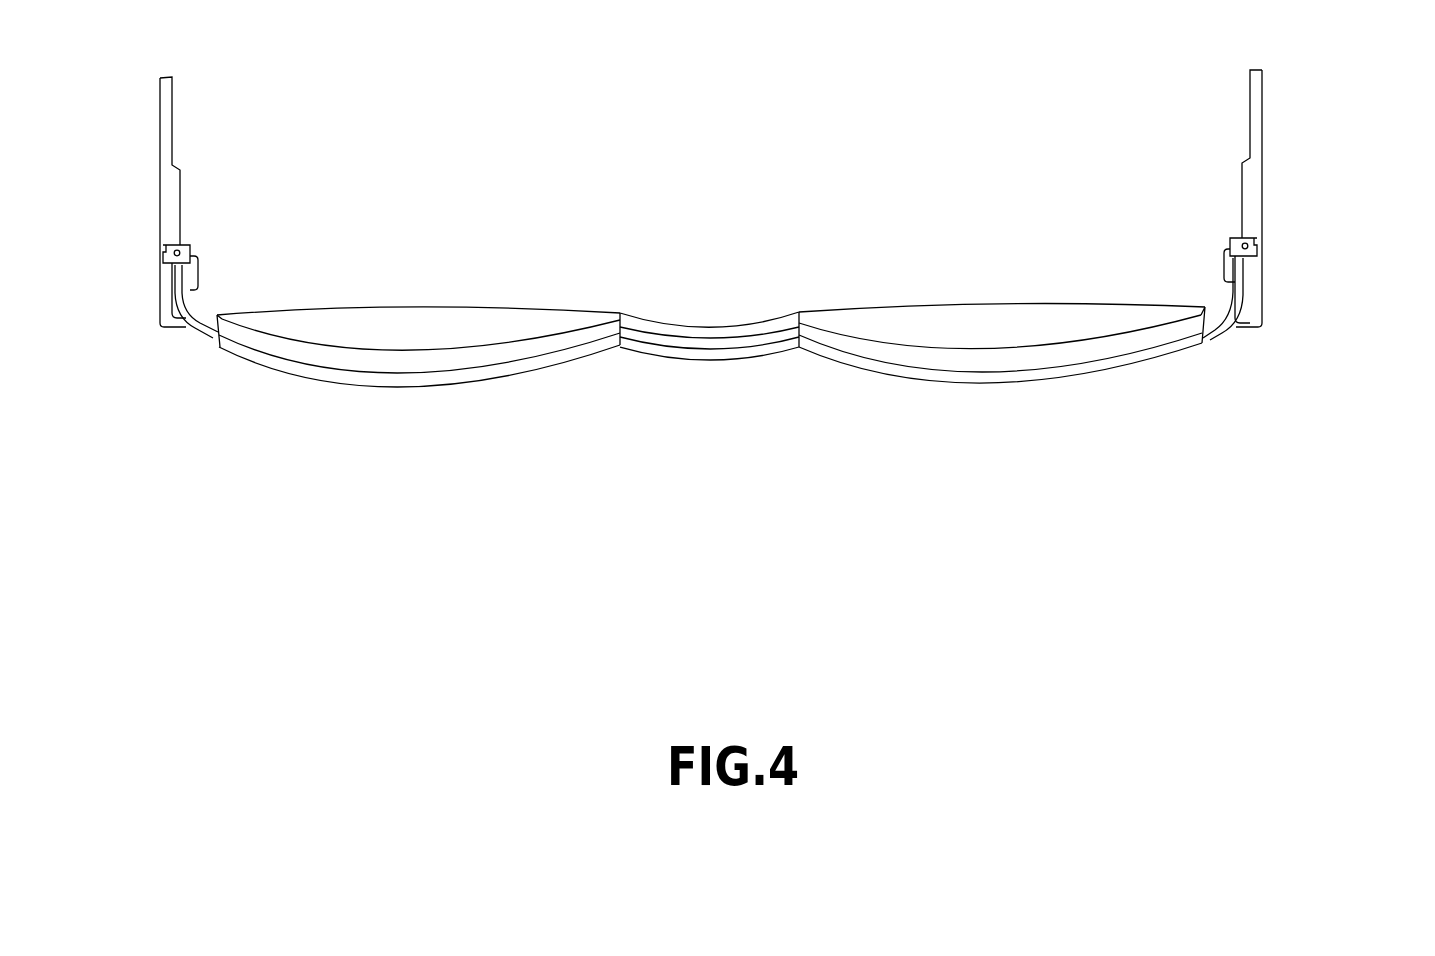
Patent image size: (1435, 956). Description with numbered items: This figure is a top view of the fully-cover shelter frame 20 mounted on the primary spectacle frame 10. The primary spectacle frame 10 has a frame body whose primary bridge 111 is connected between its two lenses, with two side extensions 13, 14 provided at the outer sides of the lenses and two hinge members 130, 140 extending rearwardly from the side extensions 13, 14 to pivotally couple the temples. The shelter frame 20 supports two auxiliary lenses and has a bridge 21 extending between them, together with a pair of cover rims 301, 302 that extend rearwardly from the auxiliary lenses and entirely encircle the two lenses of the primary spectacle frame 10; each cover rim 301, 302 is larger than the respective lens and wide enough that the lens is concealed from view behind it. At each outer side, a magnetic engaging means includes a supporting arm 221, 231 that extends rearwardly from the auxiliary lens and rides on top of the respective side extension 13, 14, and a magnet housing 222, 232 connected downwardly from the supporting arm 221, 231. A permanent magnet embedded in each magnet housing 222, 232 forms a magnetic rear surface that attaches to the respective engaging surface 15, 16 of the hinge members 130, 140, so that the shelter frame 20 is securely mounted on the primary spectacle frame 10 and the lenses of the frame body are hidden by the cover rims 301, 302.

The primary spectacle frame 10 is at (704, 205).
The shelter frame 20 is at (587, 495).
The bridge 21 is at (758, 353).
The primary bridge 111 is at (714, 333).
The cover rim 301 is at (999, 355).
The cover rim 302 is at (395, 352).
The side extension 13 is at (1251, 314).
The side extension 14 is at (182, 326).
The hinge member 130 is at (1238, 236).
The hinge member 140 is at (165, 250).
The engaging surface 15 is at (1249, 247).
The engaging surface 16 is at (173, 267).
The supporting arm 221 is at (1210, 338).
The magnet housing 222 is at (1226, 271).
The supporting arm 231 is at (203, 342).
The magnet housing 232 is at (198, 273).